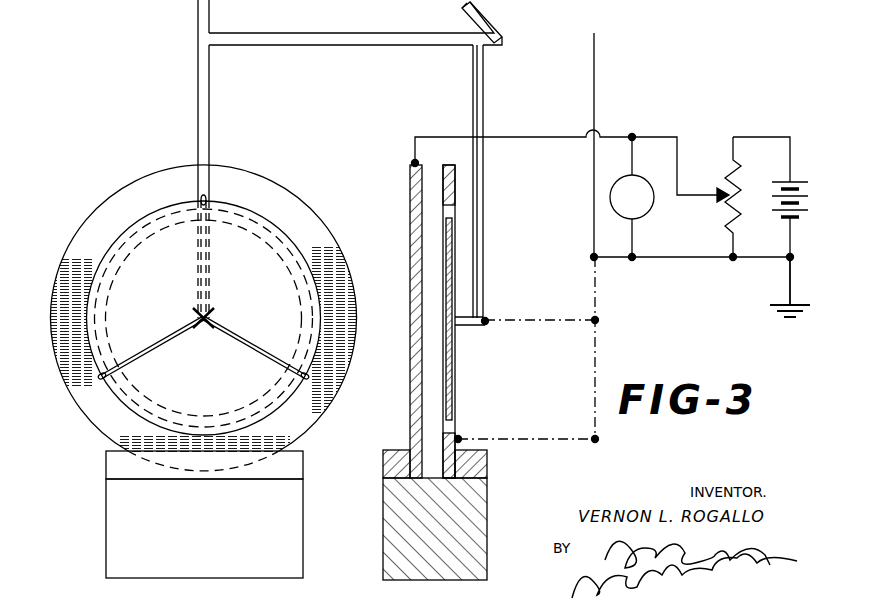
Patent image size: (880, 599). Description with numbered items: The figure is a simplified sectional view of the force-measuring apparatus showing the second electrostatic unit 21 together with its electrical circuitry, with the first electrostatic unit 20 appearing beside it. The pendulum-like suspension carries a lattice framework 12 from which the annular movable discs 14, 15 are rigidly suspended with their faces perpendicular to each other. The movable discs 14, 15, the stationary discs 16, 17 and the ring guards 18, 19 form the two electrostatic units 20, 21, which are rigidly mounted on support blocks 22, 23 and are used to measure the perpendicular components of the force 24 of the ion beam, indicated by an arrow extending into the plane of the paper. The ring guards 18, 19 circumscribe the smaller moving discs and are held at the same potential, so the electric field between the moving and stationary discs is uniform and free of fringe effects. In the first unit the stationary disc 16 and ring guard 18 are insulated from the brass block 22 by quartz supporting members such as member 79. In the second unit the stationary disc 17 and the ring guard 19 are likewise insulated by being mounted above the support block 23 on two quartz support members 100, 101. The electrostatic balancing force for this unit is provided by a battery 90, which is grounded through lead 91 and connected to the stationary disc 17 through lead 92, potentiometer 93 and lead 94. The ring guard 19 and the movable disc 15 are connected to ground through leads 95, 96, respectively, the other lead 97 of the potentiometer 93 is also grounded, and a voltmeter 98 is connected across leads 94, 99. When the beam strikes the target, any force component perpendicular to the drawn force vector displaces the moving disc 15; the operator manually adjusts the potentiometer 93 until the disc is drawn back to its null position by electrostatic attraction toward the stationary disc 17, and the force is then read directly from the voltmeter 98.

The lattice framework 12 is at (197, 9).
The movable disc 14 is at (287, 248).
The movable disc 15 is at (452, 388).
The stationary disc 16 is at (322, 230).
The stationary disc 17 is at (414, 163).
The ring guard 18 is at (258, 226).
The ring guard 19 is at (451, 166).
The electrostatic unit 20 is at (112, 194).
The electrostatic unit 21 is at (437, 128).
The support block 22 is at (110, 520).
The support block 23 is at (387, 536).
The force 24 is at (197, 318).
The insulating supporting member 79 is at (108, 464).
The battery 90 is at (780, 182).
The lead 91 is at (790, 288).
The lead 92 is at (775, 136).
The potentiometer 93 is at (724, 176).
The lead 94 is at (652, 137).
The lead 95 is at (539, 439).
The lead 96 is at (551, 319).
The lead 97 is at (731, 248).
The voltmeter 98 is at (642, 218).
The lead 99 is at (682, 259).
The support member 100 is at (385, 468).
The support member 101 is at (488, 469).